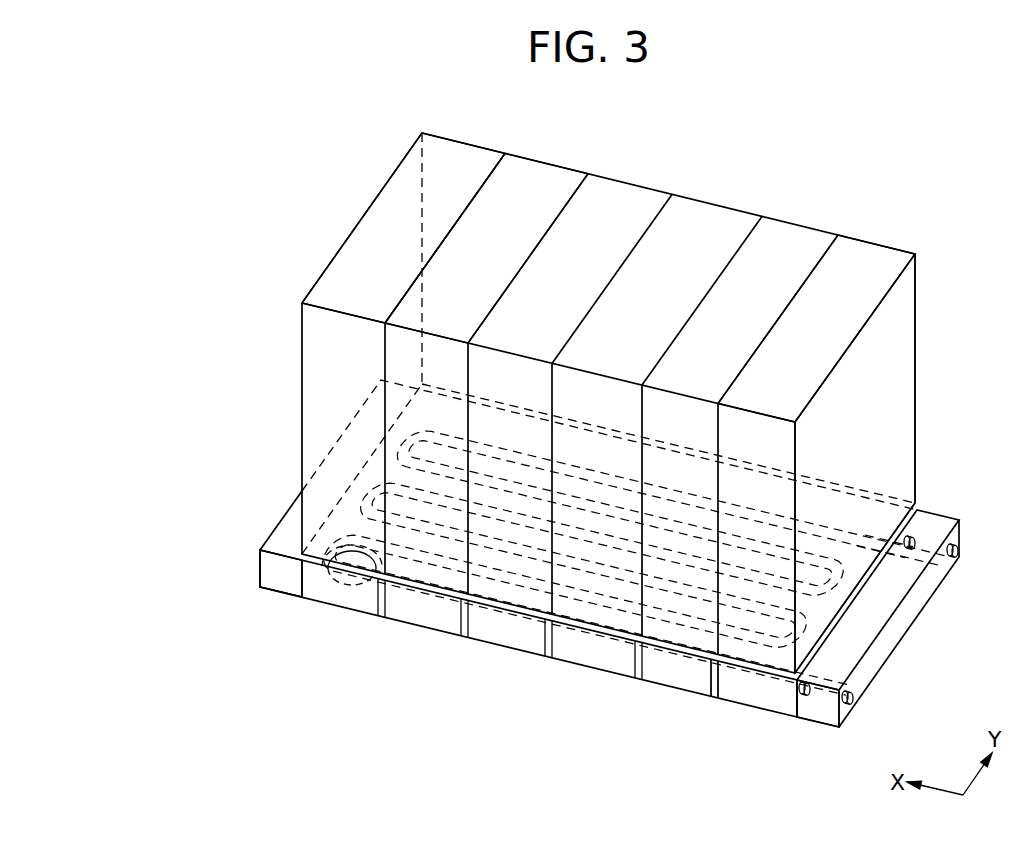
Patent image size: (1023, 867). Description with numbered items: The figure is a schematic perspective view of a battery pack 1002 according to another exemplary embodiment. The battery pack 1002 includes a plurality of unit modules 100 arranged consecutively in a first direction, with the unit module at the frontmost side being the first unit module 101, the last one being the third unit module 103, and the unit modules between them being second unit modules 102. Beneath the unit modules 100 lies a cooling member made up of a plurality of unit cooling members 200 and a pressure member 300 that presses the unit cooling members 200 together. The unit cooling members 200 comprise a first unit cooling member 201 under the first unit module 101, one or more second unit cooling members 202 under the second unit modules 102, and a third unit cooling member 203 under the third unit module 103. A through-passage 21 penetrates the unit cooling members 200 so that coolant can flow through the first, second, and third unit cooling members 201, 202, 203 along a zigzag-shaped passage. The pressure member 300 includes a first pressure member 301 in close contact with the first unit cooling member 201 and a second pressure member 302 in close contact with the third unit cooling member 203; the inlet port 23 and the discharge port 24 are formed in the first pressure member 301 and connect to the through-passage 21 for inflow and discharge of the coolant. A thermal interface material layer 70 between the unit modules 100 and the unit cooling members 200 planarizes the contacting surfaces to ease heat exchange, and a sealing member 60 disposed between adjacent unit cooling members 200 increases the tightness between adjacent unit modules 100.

The battery pack 1002 is at (837, 83).
The unit module 100 is at (903, 193).
The first unit module 101 is at (863, 248).
The second unit module 102 is at (535, 170).
The third unit module 103 is at (453, 150).
The unit cooling member 200 is at (778, 777).
The first unit cooling member 201 is at (757, 695).
The second unit cooling member 202 is at (433, 613).
The third unit cooling member 203 is at (348, 596).
The pressure member 300 is at (222, 612).
The first pressure member 301 is at (823, 740).
The second pressure member 302 is at (278, 578).
The thermal interface material layer 70 is at (870, 582).
The through-passage 21 is at (857, 520).
The inlet port 23 is at (962, 542).
The discharge port 24 is at (848, 699).
The sealing member 60 is at (303, 546).